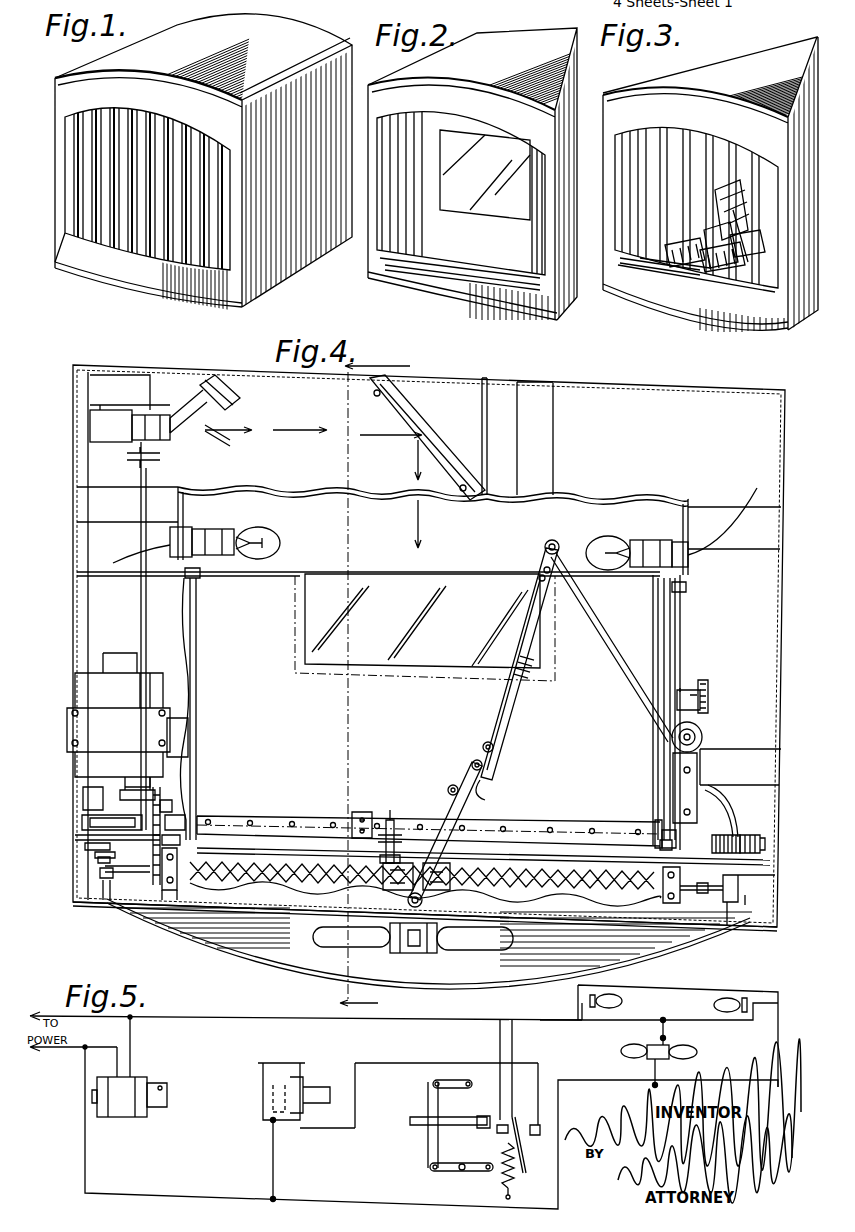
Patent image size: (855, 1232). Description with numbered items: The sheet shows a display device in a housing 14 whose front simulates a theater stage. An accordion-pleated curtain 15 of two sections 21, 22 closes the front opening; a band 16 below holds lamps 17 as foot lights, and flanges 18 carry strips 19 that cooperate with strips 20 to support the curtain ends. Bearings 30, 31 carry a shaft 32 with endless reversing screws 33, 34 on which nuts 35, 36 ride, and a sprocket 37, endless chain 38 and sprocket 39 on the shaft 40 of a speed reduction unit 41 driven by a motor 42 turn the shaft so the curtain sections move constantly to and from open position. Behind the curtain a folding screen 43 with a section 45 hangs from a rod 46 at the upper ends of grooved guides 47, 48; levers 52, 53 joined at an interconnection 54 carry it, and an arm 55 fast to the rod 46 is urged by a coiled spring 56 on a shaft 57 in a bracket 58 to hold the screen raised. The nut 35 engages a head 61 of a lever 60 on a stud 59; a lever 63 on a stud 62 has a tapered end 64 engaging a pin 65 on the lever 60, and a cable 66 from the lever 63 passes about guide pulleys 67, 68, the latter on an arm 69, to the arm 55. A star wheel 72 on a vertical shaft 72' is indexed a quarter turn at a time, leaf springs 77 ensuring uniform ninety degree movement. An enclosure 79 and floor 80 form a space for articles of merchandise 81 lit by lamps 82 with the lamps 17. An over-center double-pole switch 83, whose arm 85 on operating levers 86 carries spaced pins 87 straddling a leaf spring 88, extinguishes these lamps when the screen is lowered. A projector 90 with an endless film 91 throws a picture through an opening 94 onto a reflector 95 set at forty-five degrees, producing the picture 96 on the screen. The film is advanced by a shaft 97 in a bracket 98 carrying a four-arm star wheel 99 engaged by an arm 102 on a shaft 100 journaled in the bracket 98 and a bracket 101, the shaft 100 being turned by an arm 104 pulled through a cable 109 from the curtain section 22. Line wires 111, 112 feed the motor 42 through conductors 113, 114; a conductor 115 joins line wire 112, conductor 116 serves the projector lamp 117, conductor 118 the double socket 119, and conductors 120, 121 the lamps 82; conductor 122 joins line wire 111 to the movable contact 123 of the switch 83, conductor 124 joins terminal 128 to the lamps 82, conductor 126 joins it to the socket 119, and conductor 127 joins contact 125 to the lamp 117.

In FIG. 1, the housing 14 is at (295, 38).
In FIG. 2, the housing 14 is at (573, 73).
In FIG. 3, the housing 14 is at (757, 50).
In FIG. 4, the housing 14 is at (73, 604).
In FIG. 1, the curtain 15 is at (173, 133).
In FIG. 2, the curtain 15 is at (415, 125).
In FIG. 3, the curtain 15 is at (640, 135).
In FIG. 4, the curtain 15 is at (248, 898).
In FIG. 1, the band 16 is at (100, 283).
In FIG. 2, the band 16 is at (435, 300).
In FIG. 3, the band 16 is at (640, 300).
In FIG. 4, the band 16 is at (250, 961).
In FIG. 4, the lamps 17 is at (368, 940).
In FIG. 5, the lamps 17 is at (695, 1053).
In FIG. 1, the bottom wall 18 is at (62, 245).
In FIG. 2, the bottom wall 18 is at (380, 217).
In FIG. 3, the bottom wall 18 is at (615, 260).
In FIG. 4, the bottom wall 18 is at (120, 892).
In FIG. 4, the strips 19 is at (107, 880).
In FIG. 4, the strips 20 is at (103, 857).
In FIG. 1, the curtain section 21 is at (195, 150).
In FIG. 2, the curtain section 21 is at (548, 158).
In FIG. 3, the curtain section 21 is at (780, 178).
In FIG. 4, the curtain section 21 is at (593, 898).
In FIG. 1, the curtain section 22 is at (90, 125).
In FIG. 2, the curtain section 22 is at (378, 247).
In FIG. 3, the curtain section 22 is at (630, 165).
In FIG. 4, the curtain section 22 is at (298, 892).
In FIG. 4, the bearing 30 is at (676, 876).
In FIG. 4, the bearing 31 is at (172, 886).
In FIG. 4, the shaft 32 is at (660, 871).
In FIG. 4, the endless reversing screw 33 is at (553, 877).
In FIG. 4, the endless reversing screw 34 is at (240, 864).
In FIG. 4, the nut 35 is at (450, 866).
In FIG. 4, the nut 36 is at (390, 881).
In FIG. 4, the sprocket 37 is at (153, 895).
In FIG. 4, the endless chain 38 is at (162, 805).
In FIG. 4, the sprocket 39 is at (157, 783).
In FIG. 4, the shaft 40 is at (132, 790).
In FIG. 4, the speed reduction unit 41 is at (83, 798).
In FIG. 4, the motor 42 is at (92, 680).
In FIG. 5, the motor 42 is at (122, 1105).
In FIG. 2, the screen 43 is at (482, 246).
In FIG. 4, the screen section 45 is at (262, 680).
In FIG. 4, the rod 46 is at (660, 843).
In FIG. 4, the grooved guide 47 is at (655, 830).
In FIG. 4, the grooved guide 48 is at (172, 818).
In FIG. 4, the lever 52 is at (203, 629).
In FIG. 4, the lever 53 is at (200, 650).
In FIG. 4, the pivotal interconnection 54 is at (185, 573).
In FIG. 4, the arm 55 is at (717, 783).
In FIG. 4, the coiled spring 56 is at (748, 835).
In FIG. 4, the shaft 57 is at (733, 835).
In FIG. 4, the bracket 58 is at (765, 843).
In FIG. 4, the stud 59 is at (450, 785).
In FIG. 4, the lever 60 is at (448, 804).
In FIG. 4, the head 61 is at (425, 884).
In FIG. 4, the stud 62 is at (494, 747).
In FIG. 4, the lever 63 is at (505, 713).
In FIG. 4, the tapered end 64 is at (490, 796).
In FIG. 4, the pin 65 is at (477, 760).
In FIG. 4, the cable 66 is at (608, 644).
In FIG. 4, the guide pulley 67 is at (703, 737).
In FIG. 4, the guide pulley 68 is at (708, 680).
In FIG. 4, the arm 69 is at (368, 812).
In FIG. 4, the four-armed star wheel 72 is at (395, 813).
In FIG. 4, the vertical shaft 72' is at (404, 832).
In FIG. 4, the leaf springs 77 is at (347, 861).
In FIG. 3, the enclosure 79 is at (680, 155).
In FIG. 4, the enclosure 79 is at (680, 641).
In FIG. 2, the floor 80 is at (447, 273).
In FIG. 3, the floor 80 is at (700, 268).
In FIG. 4, the floor 80 is at (478, 554).
In FIG. 3, the articles of merchandise 81 is at (733, 185).
In FIG. 4, the lamps 82 is at (207, 533).
In FIG. 5, the lamps 82 is at (622, 1002).
In FIG. 5, the over-center double-pole switch 83 is at (518, 1170).
In FIG. 5, the arm 85 is at (410, 1120).
In FIG. 5, the operating levers 86 is at (455, 1080).
In FIG. 5, the pins 87 is at (428, 1100).
In FIG. 5, the leaf spring 88 is at (468, 1126).
In FIG. 4, the projector 90 is at (110, 415).
In FIG. 5, the projector 90 is at (282, 1063).
In FIG. 4, the endless film 91 is at (200, 404).
In FIG. 4, the opening 94 is at (352, 509).
In FIG. 4, the reflector 95 is at (437, 447).
In FIG. 2, the picture 96 is at (515, 150).
In FIG. 4, the shaft 97 is at (150, 483).
In FIG. 4, the bracket 98 is at (95, 818).
In FIG. 4, the four-arm star wheel 99 is at (180, 841).
In FIG. 4, the shaft 100 is at (85, 846).
In FIG. 4, the bracket 101 is at (105, 869).
In FIG. 4, the arm 102 is at (95, 855).
In FIG. 4, the arm 104 is at (108, 847).
In FIG. 4, the cable 109 is at (235, 853).
In FIG. 5, the line wire 111 is at (50, 1016).
In FIG. 5, the line wire 112 is at (55, 1049).
In FIG. 5, the conductor 113 is at (135, 1058).
In FIG. 5, the conductor 114 is at (117, 1060).
In FIG. 5, the conductor 115 is at (170, 1195).
In FIG. 5, the conductor 116 is at (270, 1155).
In FIG. 5, the lamp 117 is at (268, 1092).
In FIG. 5, the conductor 118 is at (650, 1067).
In FIG. 5, the double socket 119 is at (652, 1045).
In FIG. 5, the conductor 120 is at (765, 1005).
In FIG. 5, the conductor 121 is at (715, 980).
In FIG. 5, the conductor 122 is at (462, 1018).
In FIG. 5, the movable contact 123 is at (520, 1150).
In FIG. 5, the conductor 124 is at (536, 1022).
In FIG. 5, the contact 125 is at (558, 1112).
In FIG. 5, the conductor 126 is at (665, 1034).
In FIG. 5, the conductor 127 is at (408, 1063).
In FIG. 5, the terminal 128 is at (497, 1127).